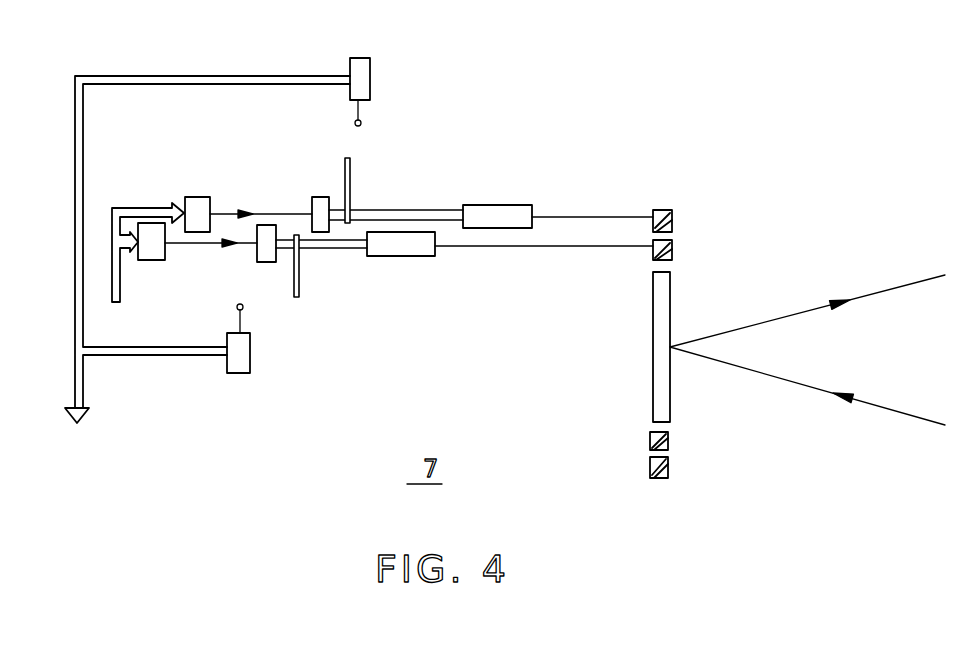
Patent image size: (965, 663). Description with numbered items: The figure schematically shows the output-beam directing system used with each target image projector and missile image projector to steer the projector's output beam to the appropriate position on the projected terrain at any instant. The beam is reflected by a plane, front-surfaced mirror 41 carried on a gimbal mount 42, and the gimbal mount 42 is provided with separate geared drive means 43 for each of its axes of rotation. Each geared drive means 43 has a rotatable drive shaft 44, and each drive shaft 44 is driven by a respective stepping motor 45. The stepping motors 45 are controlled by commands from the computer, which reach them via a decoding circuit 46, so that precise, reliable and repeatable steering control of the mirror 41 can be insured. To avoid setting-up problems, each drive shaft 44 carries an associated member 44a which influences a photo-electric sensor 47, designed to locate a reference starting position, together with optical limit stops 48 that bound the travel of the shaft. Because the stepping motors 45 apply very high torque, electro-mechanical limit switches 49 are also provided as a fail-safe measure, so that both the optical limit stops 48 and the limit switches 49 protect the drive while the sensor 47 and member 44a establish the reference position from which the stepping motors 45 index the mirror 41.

The plane front-surfaced mirror 41 is at (665, 321).
The gimbal mount 42 is at (672, 248).
The geared drive means 43 is at (513, 212).
The rotatable drive shaft 44 is at (441, 216).
The associated member 44a is at (351, 172).
The stepping motor 45 is at (313, 207).
The decoding circuit 46 is at (212, 180).
The photo-electric sensor 47 is at (330, 186).
The optical limit stops 48 is at (337, 143).
The electro-mechanical limit switches 49 is at (359, 90).